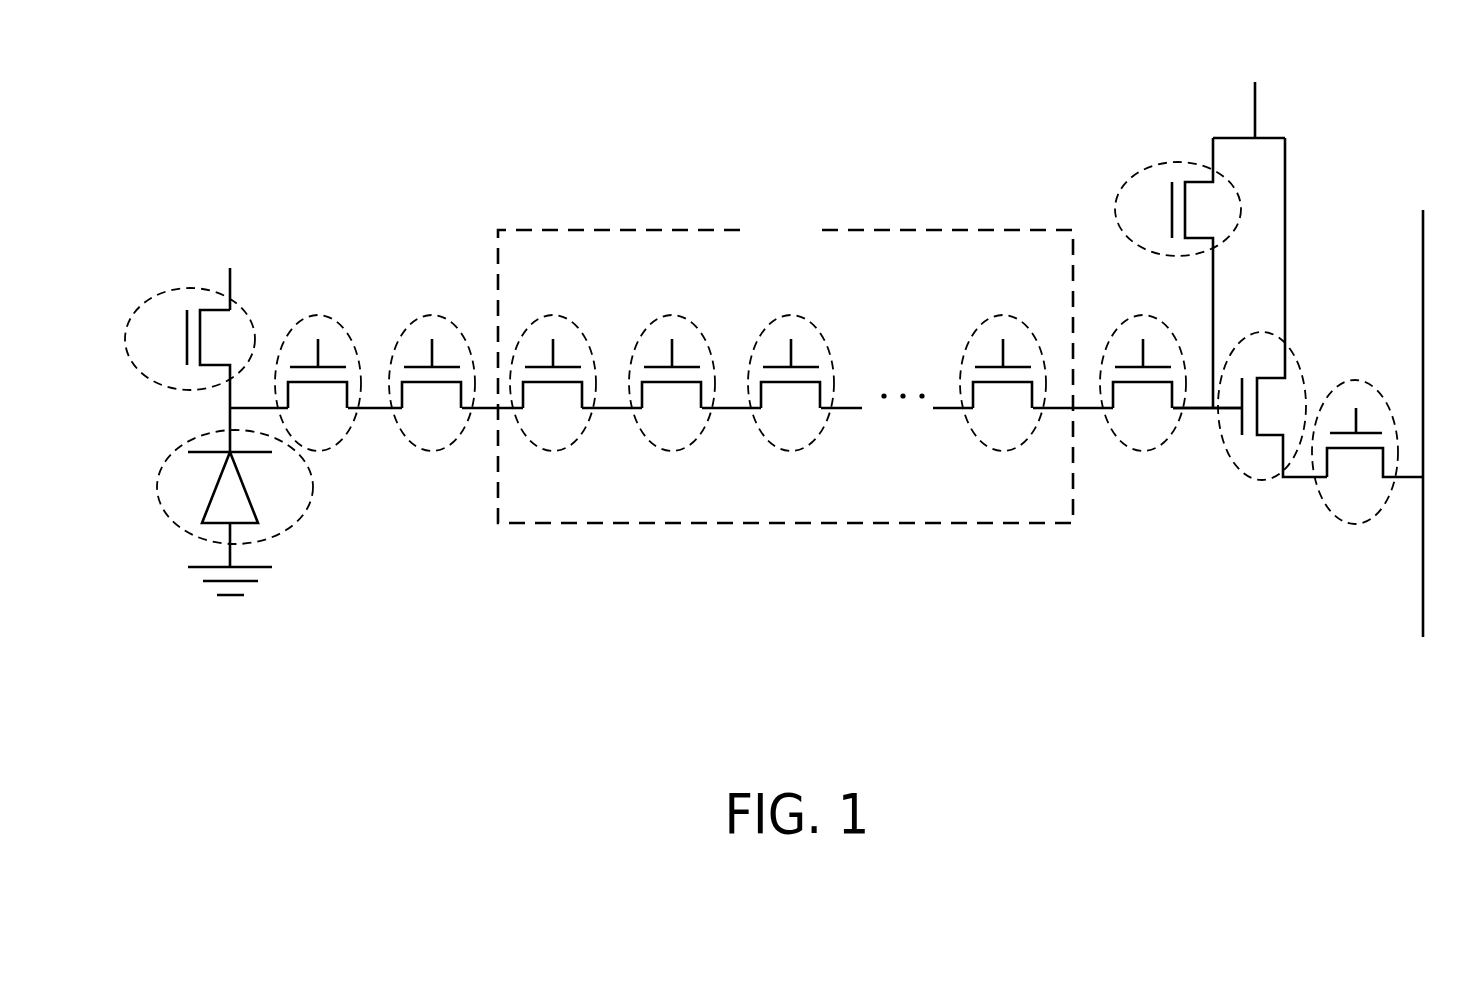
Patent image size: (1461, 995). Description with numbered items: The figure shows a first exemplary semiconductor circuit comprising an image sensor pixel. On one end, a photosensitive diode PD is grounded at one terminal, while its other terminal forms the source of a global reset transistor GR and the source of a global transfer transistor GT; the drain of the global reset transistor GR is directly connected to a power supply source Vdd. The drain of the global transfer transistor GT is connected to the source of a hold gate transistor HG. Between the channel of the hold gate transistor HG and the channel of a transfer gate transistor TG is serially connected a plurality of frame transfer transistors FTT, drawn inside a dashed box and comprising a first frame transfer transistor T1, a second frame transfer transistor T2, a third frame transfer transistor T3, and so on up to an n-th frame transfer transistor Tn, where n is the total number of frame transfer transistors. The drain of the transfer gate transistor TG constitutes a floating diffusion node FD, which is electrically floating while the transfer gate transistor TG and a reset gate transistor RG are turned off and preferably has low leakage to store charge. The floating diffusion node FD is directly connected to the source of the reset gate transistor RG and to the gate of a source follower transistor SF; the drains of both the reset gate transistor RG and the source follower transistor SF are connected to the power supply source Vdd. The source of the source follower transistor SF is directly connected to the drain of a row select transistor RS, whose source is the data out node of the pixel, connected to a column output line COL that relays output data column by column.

The power supply source Vdd is at (736, 173).
The global reset transistor GR is at (187, 338).
The photosensitive diode PD is at (130, 505).
The global transfer transistor GT is at (290, 325).
The hold gate transistor HG is at (403, 325).
The plurality of frame transfer transistors FTT is at (746, 250).
The first frame transfer transistor T1 is at (531, 325).
The second frame transfer transistor T2 is at (650, 325).
The third frame transfer transistor T3 is at (769, 325).
The n-th frame transfer transistor Tn is at (978, 325).
The transfer gate transistor TG is at (1119, 325).
The reset gate transistor RG is at (1172, 210).
The floating diffusion node FD is at (1197, 409).
The source follower transistor SF is at (1218, 482).
The row select transistor RS is at (1384, 400).
The column output line COL is at (1414, 401).